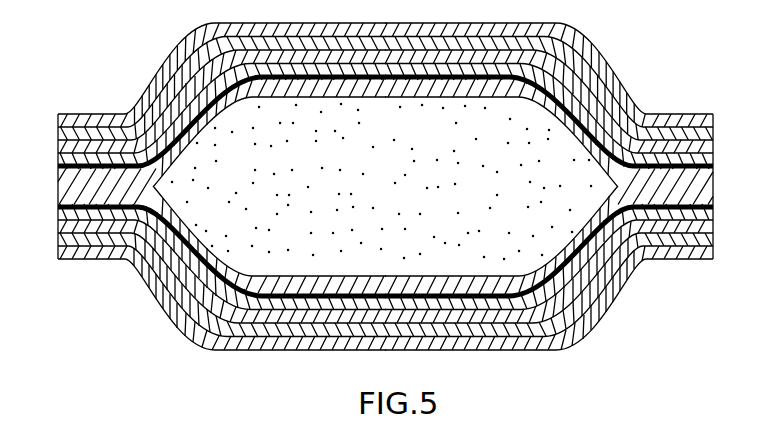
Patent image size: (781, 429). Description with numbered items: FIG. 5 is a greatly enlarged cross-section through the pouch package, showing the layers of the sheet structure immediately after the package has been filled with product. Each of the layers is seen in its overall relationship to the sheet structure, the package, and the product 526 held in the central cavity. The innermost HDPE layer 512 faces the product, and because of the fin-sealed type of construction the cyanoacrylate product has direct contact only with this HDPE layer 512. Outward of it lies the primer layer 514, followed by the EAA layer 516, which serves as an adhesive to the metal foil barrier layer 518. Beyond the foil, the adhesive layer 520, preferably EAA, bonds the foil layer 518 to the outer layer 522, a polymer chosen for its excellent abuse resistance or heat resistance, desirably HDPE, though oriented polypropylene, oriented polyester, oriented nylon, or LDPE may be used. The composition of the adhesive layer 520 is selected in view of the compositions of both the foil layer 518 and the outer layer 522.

The HDPE layer 512 is at (648, 187).
The primer layer 514 is at (78, 188).
The EAA adhesive layer 516 is at (707, 162).
The metal foil barrier layer 518 is at (59, 149).
The adhesive layer 520 is at (708, 133).
The outer polymer layer 522 is at (59, 121).
The filled cavity of bulge 526 is at (272, 210).